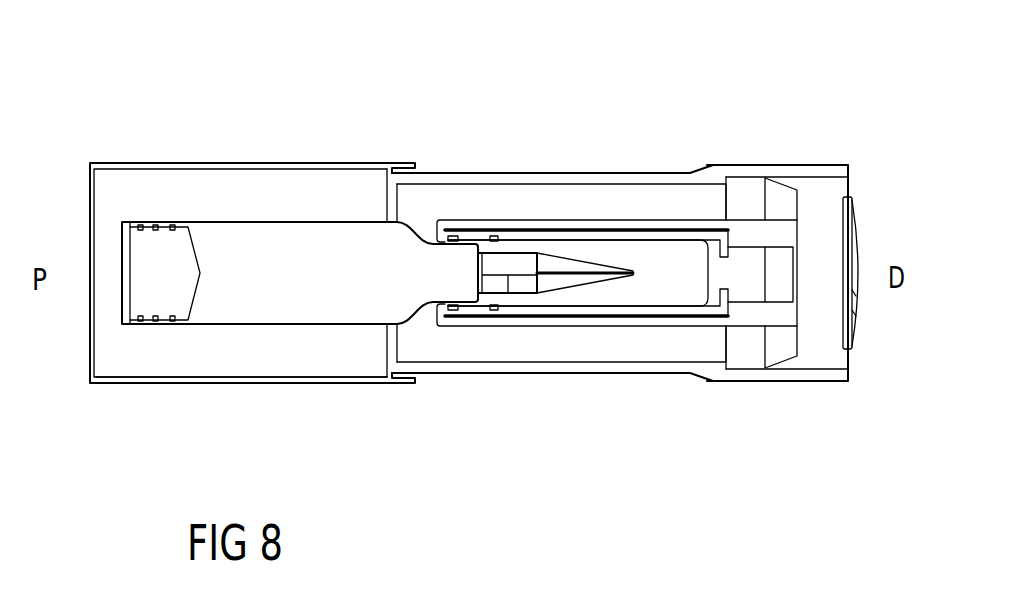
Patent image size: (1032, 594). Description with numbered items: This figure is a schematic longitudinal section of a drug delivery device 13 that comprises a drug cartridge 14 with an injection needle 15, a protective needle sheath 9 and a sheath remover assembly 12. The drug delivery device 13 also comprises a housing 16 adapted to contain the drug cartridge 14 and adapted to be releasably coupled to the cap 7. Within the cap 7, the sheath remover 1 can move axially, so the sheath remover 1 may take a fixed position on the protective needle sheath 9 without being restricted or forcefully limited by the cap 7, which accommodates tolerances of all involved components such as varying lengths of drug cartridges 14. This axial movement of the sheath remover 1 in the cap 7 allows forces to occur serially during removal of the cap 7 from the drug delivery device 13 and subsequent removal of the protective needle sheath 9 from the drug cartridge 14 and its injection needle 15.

The sheath remover 1 is at (697, 205).
The cap 7 is at (526, 172).
The protective needle sheath 9 is at (651, 227).
The sheath remover assembly 12 is at (845, 157).
The drug delivery device 13 is at (188, 137).
The drug cartridge 14 is at (287, 303).
The injection needle 15 is at (510, 278).
The housing 16 is at (185, 380).